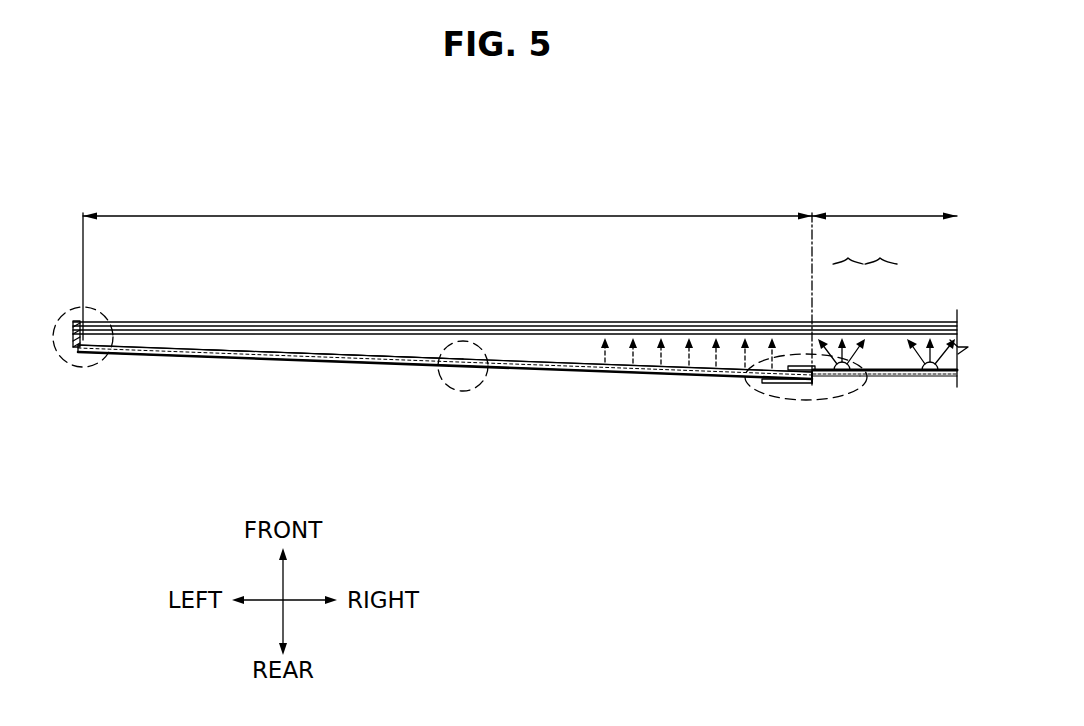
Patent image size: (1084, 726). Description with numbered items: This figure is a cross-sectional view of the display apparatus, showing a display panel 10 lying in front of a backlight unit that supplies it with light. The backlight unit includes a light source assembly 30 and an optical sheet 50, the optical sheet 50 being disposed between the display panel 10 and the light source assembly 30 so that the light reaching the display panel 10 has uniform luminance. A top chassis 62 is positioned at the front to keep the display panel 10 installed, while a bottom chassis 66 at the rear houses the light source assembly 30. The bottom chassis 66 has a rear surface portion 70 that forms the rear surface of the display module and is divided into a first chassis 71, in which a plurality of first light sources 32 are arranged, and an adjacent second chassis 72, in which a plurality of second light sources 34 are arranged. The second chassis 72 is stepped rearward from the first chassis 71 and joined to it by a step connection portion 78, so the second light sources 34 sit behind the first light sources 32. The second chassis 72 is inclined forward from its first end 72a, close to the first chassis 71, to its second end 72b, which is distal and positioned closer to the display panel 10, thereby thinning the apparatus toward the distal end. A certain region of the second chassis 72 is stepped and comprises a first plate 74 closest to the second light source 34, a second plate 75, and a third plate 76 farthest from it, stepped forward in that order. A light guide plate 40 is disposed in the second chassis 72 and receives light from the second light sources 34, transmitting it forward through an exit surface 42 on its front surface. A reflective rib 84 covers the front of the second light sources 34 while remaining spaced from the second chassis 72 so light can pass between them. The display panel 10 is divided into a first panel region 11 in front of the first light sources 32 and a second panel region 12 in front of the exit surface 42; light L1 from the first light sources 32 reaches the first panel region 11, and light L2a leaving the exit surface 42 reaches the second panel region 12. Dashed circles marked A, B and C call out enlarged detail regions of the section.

The display panel 10 is at (150, 322).
The first panel region 11 is at (884, 287).
The second panel region 12 is at (447, 265).
The light source assembly 30 is at (865, 246).
The first light sources 32 is at (846, 362).
The second light sources 34 is at (818, 368).
The light guide plate 40 is at (336, 358).
The exit surface 42 is at (293, 351).
The optical sheet 50 is at (272, 333).
The top chassis 62 is at (70, 314).
The bottom chassis 66 is at (147, 364).
The rear surface portion 70 is at (193, 358).
The first chassis 71 is at (915, 373).
The second chassis 72 is at (398, 366).
The first end 72a is at (814, 382).
The second end 72b is at (76, 349).
The first plate 74 is at (763, 384).
The second plate 75 is at (519, 374).
The third plate 76 is at (241, 361).
The step connection portion 78 is at (818, 379).
The reflective rib 84 is at (796, 366).
The detail region A is at (775, 400).
The detail region B is at (447, 391).
The detail region C is at (93, 367).
The light L1 is at (922, 345).
The light L2a is at (688, 353).